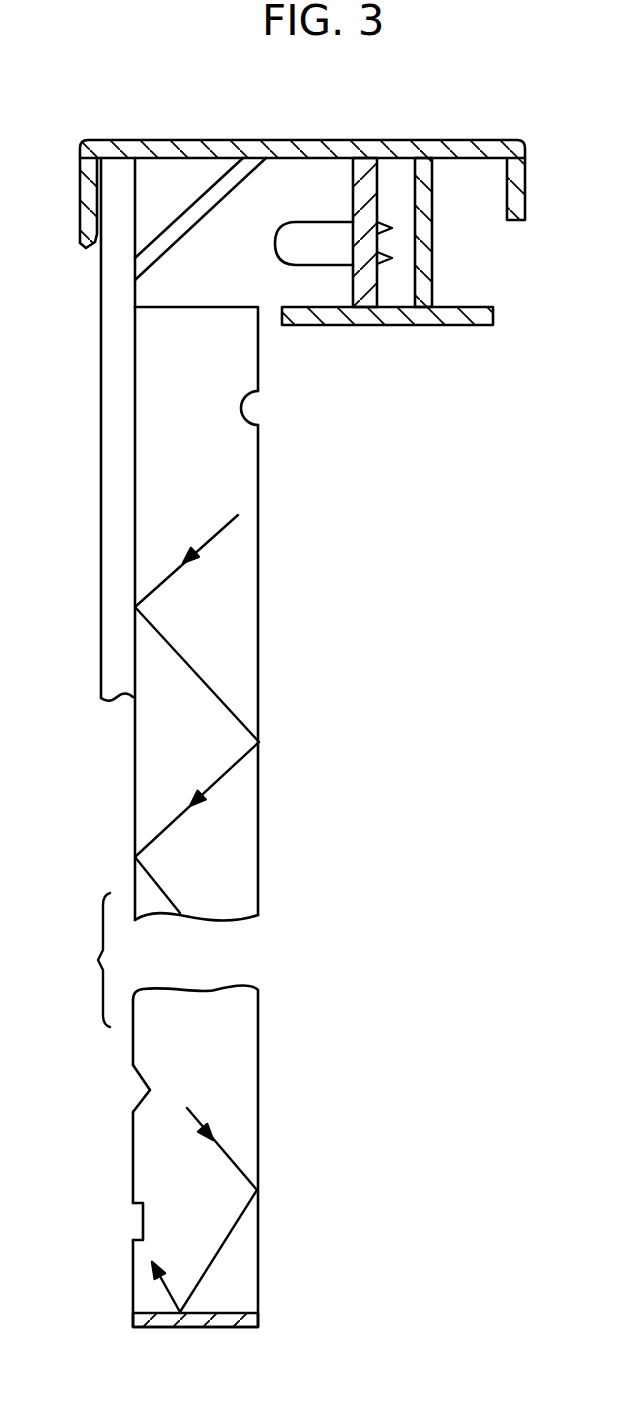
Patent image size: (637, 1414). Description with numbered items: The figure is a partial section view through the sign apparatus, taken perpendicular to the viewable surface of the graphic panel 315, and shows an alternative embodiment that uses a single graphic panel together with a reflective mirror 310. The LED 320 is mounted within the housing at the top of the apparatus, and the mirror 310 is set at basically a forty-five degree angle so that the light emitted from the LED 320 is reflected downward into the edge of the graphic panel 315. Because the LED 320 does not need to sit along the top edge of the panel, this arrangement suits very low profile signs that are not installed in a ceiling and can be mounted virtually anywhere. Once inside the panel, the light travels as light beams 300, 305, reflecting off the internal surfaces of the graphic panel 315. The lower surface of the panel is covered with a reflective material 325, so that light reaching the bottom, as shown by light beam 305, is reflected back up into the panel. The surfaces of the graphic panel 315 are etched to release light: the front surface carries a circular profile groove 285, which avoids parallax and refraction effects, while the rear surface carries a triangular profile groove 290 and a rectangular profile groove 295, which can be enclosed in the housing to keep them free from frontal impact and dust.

The circular profile groove 285 is at (244, 411).
The triangular profile groove 290 is at (141, 1101).
The rectangular profile groove 295 is at (142, 1221).
The light beam 300 is at (234, 507).
The light beam 305 is at (238, 1148).
The reflective mirror 310 is at (215, 197).
The graphic panel 315 is at (237, 618).
The LED 320 is at (318, 233).
The reflective material 325 is at (238, 1310).